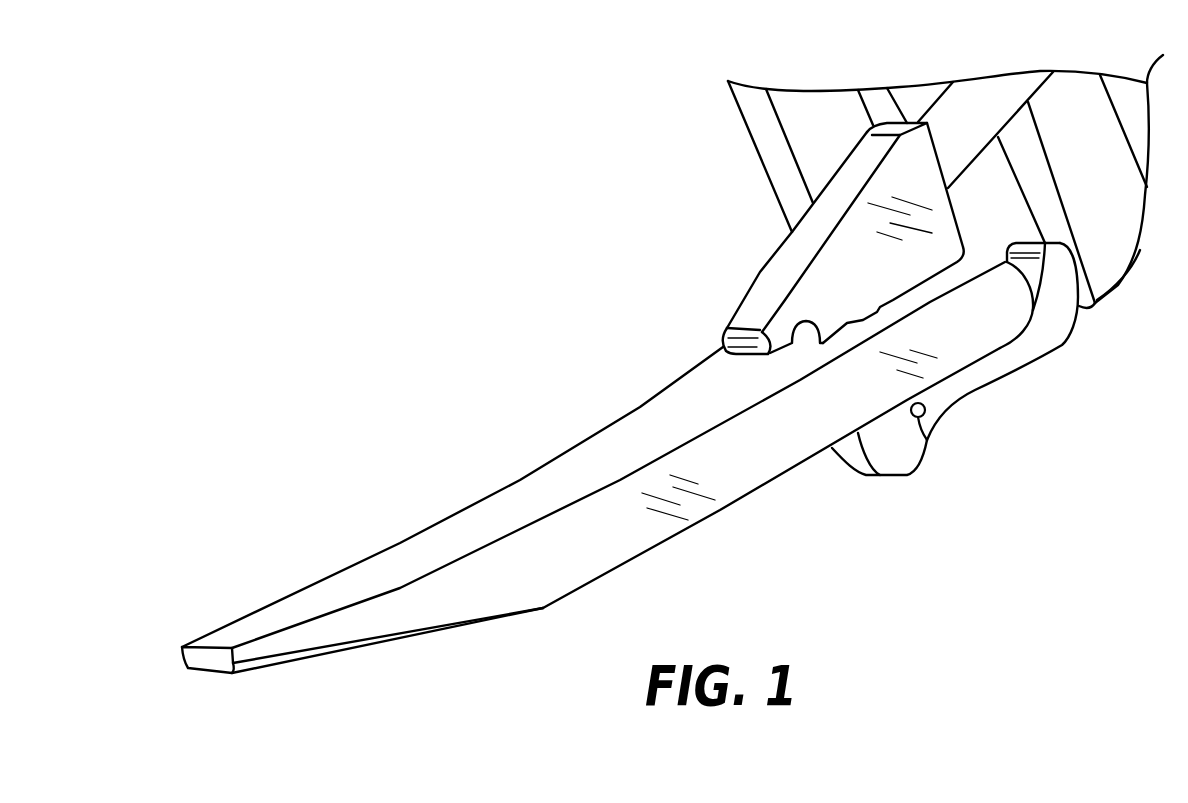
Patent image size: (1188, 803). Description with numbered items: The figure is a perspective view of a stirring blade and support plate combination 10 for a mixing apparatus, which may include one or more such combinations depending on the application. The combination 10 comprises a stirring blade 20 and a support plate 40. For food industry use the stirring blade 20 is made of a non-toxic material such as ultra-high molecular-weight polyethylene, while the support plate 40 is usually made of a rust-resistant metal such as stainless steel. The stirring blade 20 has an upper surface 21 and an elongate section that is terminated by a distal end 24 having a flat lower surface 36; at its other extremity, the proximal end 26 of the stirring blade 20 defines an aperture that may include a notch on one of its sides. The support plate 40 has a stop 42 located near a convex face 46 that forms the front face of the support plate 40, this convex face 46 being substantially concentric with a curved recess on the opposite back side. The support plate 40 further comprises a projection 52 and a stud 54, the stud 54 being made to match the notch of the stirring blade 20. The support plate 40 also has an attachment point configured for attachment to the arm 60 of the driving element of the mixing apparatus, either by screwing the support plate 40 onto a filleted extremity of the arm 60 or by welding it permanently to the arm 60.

The combination 10 is at (508, 347).
The stirring blade 20 is at (613, 499).
The upper surface 21 is at (652, 427).
The distal end 24 is at (275, 617).
The proximal end 26 is at (973, 345).
The flat lower surface 36 is at (347, 653).
The support plate 40 is at (768, 275).
The stop 42 is at (730, 338).
The convex face 46 is at (862, 460).
The projection 52 is at (1040, 342).
The stud 54 is at (928, 438).
The arm 60 is at (1028, 102).